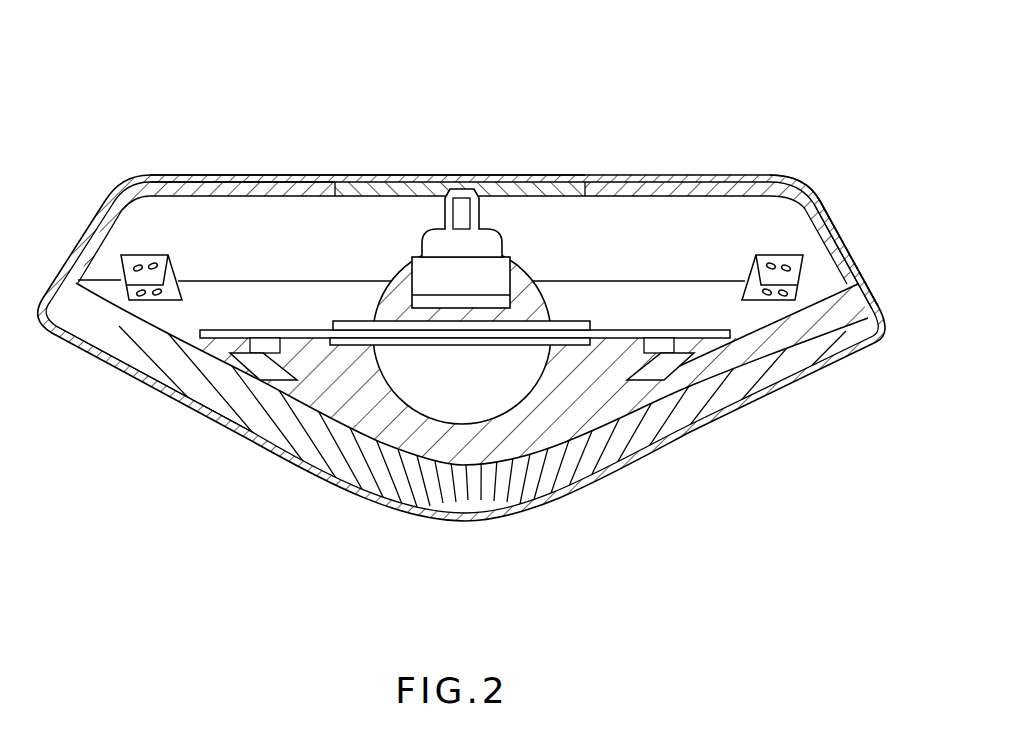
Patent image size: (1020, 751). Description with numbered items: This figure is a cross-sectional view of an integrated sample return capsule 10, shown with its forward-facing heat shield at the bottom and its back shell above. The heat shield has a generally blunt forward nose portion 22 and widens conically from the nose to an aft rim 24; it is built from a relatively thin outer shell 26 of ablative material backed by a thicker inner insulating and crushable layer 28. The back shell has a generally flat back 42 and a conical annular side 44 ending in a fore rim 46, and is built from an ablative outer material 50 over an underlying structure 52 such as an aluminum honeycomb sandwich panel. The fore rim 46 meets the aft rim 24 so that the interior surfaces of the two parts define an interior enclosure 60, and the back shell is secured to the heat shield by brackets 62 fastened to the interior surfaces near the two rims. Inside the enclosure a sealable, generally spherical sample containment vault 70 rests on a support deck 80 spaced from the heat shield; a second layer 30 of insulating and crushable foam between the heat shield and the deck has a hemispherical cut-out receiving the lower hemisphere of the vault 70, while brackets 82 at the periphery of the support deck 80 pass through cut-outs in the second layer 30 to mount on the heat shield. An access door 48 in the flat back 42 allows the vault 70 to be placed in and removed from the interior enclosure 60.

The integrated sample return capsule 10 is at (553, 70).
The blunt forward nose portion 22 is at (462, 519).
The aft rim 24 is at (860, 275).
The outer shell 26 is at (208, 416).
The inner insulating and crushable layer 28 is at (273, 421).
The second layer 30 is at (368, 414).
The flat back 42 is at (288, 178).
The conical annular side 44 is at (825, 208).
The fore rim 46 is at (860, 262).
The access door 48 is at (449, 178).
The ablative outer material 50 is at (163, 180).
The underlying structure 52 is at (210, 193).
The interior enclosure 60 is at (346, 249).
The brackets 62 is at (803, 271).
The sample containment vault 70 is at (527, 279).
The support deck 80 is at (575, 318).
The brackets 82 is at (253, 363).